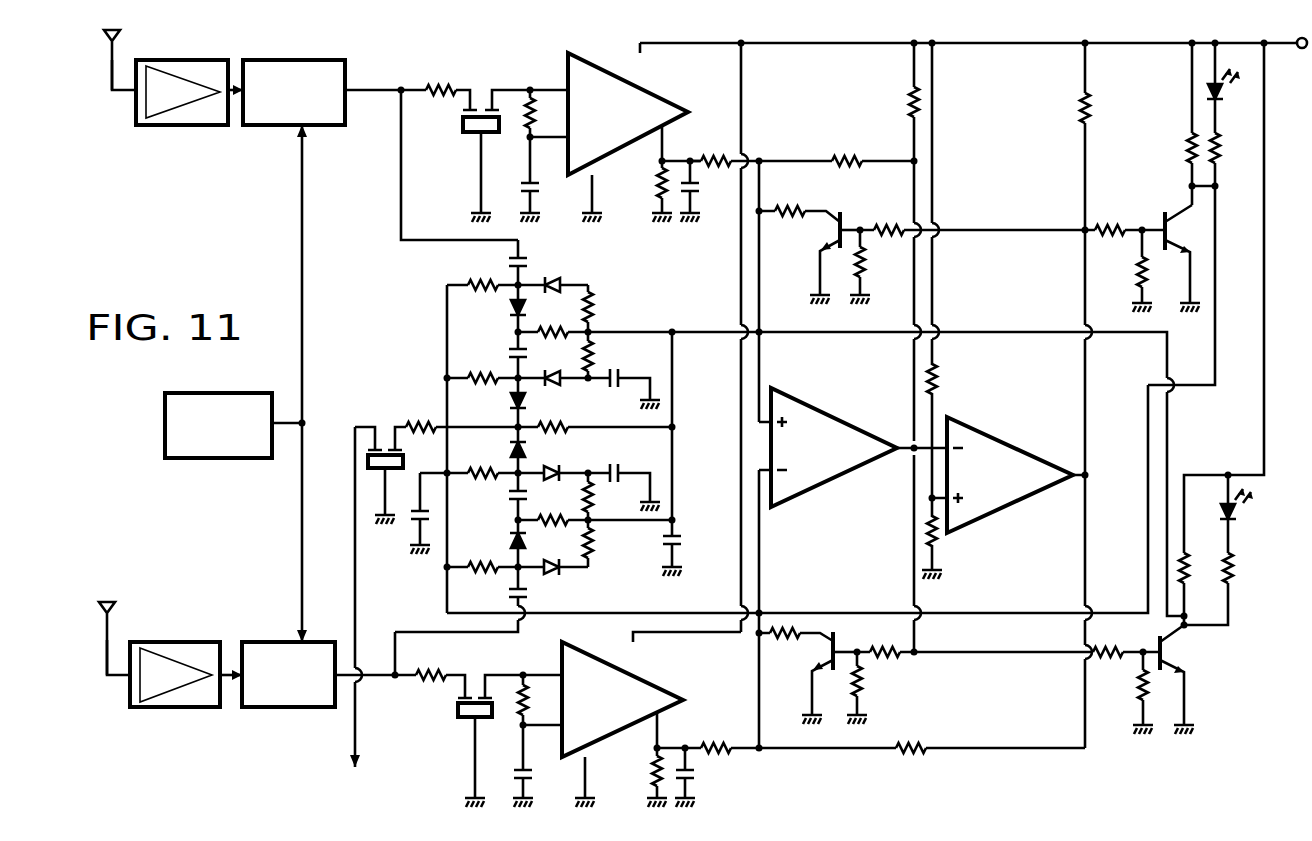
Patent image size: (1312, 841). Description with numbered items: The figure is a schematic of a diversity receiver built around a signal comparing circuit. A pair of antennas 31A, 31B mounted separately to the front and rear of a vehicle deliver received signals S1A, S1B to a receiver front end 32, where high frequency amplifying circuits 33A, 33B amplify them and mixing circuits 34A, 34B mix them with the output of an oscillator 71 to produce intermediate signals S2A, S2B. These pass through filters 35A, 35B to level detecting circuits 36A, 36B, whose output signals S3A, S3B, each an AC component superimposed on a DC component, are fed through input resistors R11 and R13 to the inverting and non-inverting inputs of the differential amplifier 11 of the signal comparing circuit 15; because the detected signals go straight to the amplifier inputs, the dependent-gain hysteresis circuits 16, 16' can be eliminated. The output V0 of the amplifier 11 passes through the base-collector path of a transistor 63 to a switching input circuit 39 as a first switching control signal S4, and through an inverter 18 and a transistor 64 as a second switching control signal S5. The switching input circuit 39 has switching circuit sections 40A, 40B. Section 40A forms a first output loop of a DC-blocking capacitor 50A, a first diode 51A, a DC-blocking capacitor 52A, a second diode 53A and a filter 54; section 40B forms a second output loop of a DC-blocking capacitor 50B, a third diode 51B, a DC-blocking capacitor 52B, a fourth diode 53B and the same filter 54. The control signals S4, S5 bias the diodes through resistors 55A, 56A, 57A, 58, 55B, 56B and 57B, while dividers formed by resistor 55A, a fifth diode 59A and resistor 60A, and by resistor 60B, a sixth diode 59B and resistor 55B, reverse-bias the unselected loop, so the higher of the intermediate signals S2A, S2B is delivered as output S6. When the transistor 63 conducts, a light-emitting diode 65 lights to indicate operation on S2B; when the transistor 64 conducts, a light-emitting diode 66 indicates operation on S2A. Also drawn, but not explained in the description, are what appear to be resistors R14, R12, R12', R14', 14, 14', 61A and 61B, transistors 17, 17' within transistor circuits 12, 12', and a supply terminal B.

The antenna 31B is at (125, 39).
The received signal S1B is at (112, 92).
The high frequency amplifying circuit 33B is at (185, 126).
The mixing circuit 34B is at (268, 126).
The intermediate signal S2B is at (378, 90).
The filter 35B is at (533, 66).
The level detecting circuit 36B is at (728, 89).
The input resistor R13 is at (714, 160).
The output signal S3B is at (760, 160).
The resistor R14 is at (868, 132).
The dependent-gain hysteresis circuit 16 is at (896, 348).
The resistor R12' is at (798, 194).
The transistor circuit 12' is at (921, 237).
The transistor 17' is at (805, 272).
The resistor 14' is at (879, 269).
The DC-blocking capacitor 50B is at (524, 258).
The sixth diode 59B is at (566, 282).
The resistor 60B is at (592, 302).
The resistor 55B is at (466, 282).
The third diode 51B is at (509, 308).
The resistor 56B is at (580, 330).
The switching circuit section 40B is at (530, 419).
The DC-blocking capacitor 52B is at (509, 353).
The resistor 61B is at (588, 359).
The switching input circuit 39 is at (539, 361).
The first switching control signal S4 is at (704, 332).
The resistor 57B is at (510, 400).
The fourth diode 53B is at (536, 391).
The filter 54 is at (382, 444).
The resistor 57A is at (510, 455).
The second diode 53A is at (554, 468).
The resistor 58 is at (610, 470).
The DC-blocking capacitor 52A is at (509, 512).
The resistor 61A is at (588, 504).
The first diode 51A is at (509, 553).
The resistor 56A is at (554, 522).
The resistor 60A is at (588, 542).
The switching circuit section 40A is at (541, 482).
The resistor 55A is at (509, 598).
The DC-blocking capacitor 50A is at (536, 598).
The fifth diode 59A is at (608, 588).
The second switching control signal S5 is at (700, 613).
The signal comparing circuit 15 is at (853, 455).
The differential amplifier 11 is at (816, 494).
The output V0 is at (906, 486).
The inverter 18 is at (1035, 404).
The transistor circuit 12 is at (841, 646).
The resistor R12 is at (795, 658).
The transistor 17 is at (799, 694).
The resistor 14 is at (886, 685).
The dependent-gain hysteresis circuit 16' is at (1005, 703).
The input resistor R11 is at (729, 756).
The resistor R14' is at (859, 782).
The output signal S3A is at (748, 748).
The level detecting circuit 36A is at (723, 674).
The filter 35A is at (523, 674).
The intermediate signal S2A is at (388, 668).
The output S6 is at (358, 750).
The antenna 31A is at (116, 604).
The received signal S1A is at (110, 690).
The high frequency amplifying circuit 33A is at (182, 708).
The mixing circuit 34A is at (290, 708).
The receiver front end 32 is at (187, 268).
The oscillator 71 is at (245, 460).
The transistor 64 is at (1164, 220).
The light-emitting diode 66 is at (1218, 101).
The transistor 63 is at (1172, 664).
The light-emitting diode 65 is at (1230, 521).
The power supply terminal B is at (973, 67).